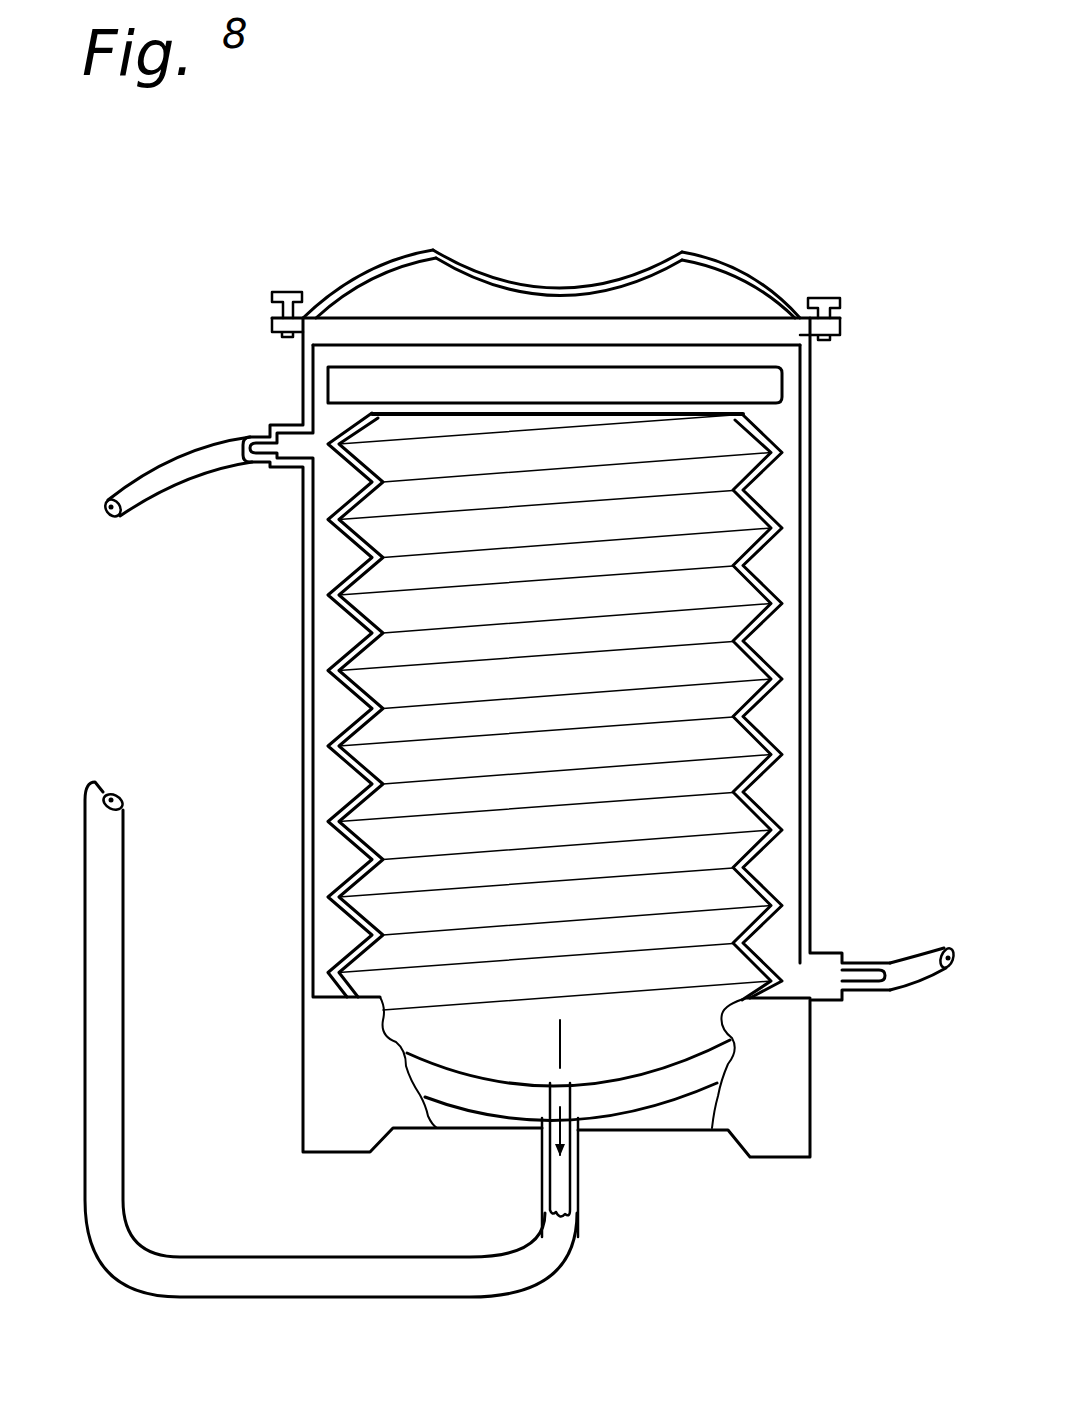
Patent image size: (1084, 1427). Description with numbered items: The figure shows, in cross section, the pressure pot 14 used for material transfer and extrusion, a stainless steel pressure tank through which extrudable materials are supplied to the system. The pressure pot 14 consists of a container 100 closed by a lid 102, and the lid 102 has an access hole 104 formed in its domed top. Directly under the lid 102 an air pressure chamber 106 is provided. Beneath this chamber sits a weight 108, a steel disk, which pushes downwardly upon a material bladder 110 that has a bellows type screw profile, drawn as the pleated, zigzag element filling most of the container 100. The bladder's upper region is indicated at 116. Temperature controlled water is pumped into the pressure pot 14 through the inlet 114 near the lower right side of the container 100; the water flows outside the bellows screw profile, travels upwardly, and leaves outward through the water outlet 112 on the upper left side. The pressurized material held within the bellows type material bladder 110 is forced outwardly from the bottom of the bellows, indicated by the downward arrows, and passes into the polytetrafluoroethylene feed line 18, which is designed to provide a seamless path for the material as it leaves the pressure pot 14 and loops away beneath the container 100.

The pressure pot 14 is at (504, 110).
The container 100 is at (301, 628).
The lid 102 is at (750, 282).
The access hole 104 is at (583, 262).
The air pressure chamber 106 is at (410, 298).
The weight 108 is at (330, 382).
The material bladder 110 is at (760, 569).
The water outlet 112 is at (178, 458).
The inlet 114 is at (906, 984).
The top of filter element 116 is at (779, 431).
The feed line 18 is at (122, 860).